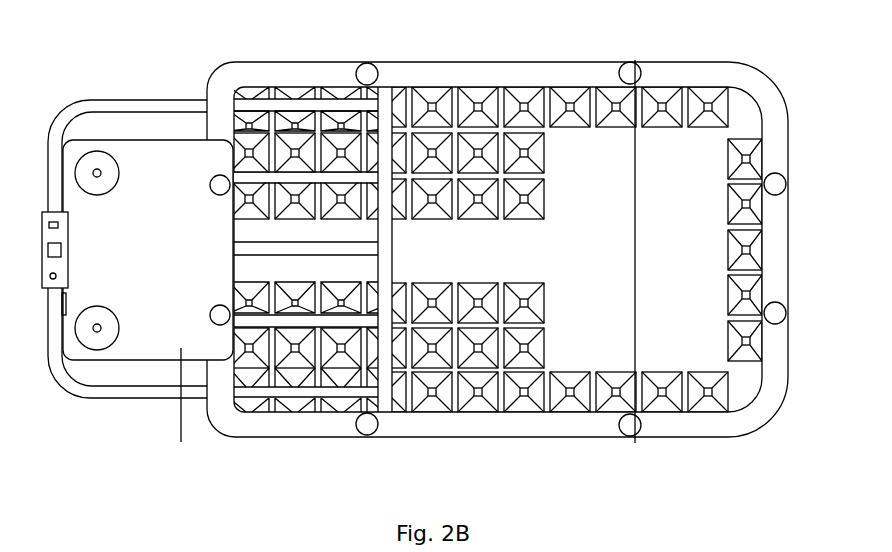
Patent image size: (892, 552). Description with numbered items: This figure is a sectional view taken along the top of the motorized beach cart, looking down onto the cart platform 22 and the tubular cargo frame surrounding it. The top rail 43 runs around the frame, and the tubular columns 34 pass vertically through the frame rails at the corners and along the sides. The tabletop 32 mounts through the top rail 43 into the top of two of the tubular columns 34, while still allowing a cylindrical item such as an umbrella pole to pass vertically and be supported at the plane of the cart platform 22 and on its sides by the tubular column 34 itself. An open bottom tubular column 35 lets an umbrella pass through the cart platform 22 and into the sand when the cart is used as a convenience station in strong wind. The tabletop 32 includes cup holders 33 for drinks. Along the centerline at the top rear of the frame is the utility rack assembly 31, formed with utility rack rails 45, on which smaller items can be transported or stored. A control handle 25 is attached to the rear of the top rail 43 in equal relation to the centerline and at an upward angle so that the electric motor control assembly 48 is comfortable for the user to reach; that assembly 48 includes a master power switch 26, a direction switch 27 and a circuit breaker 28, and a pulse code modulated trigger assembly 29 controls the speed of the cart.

The cart platform 22 is at (740, 377).
The control handle 25 is at (132, 105).
The master power switch 26 is at (60, 224).
The direction switch 27 is at (61, 250).
The circuit breaker 28 is at (56, 276).
The pulse code modulated trigger assembly 29 is at (68, 301).
The utility rack assembly 31 is at (382, 248).
The tabletop 32 is at (163, 402).
The cup holders 33 is at (110, 170).
The tubular columns 34 is at (217, 195).
The open bottom tubular column 35 is at (211, 312).
The top rail 43 is at (767, 103).
The utility rack rails 45 is at (293, 105).
The electric motor control assembly 48 is at (72, 213).